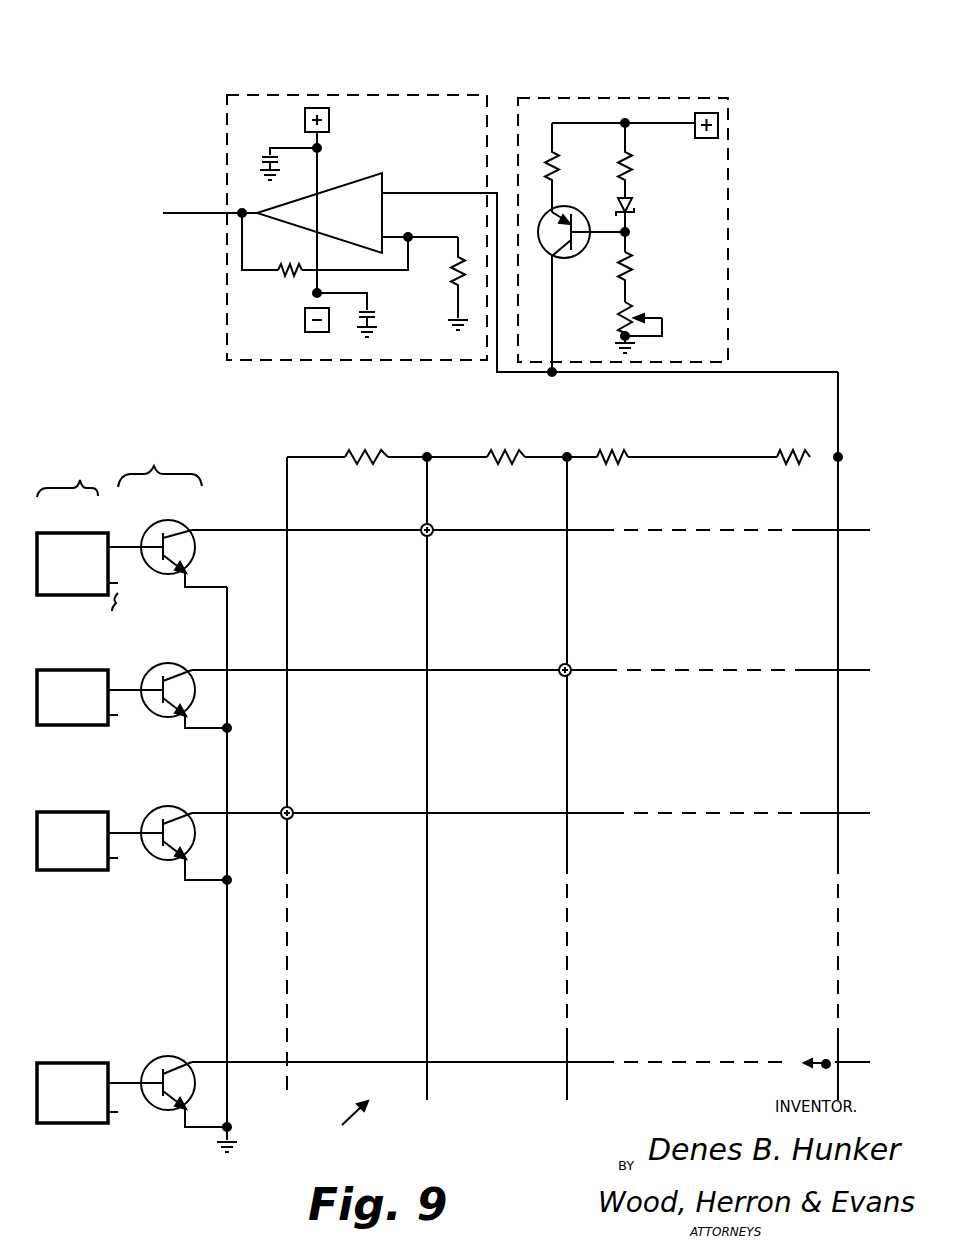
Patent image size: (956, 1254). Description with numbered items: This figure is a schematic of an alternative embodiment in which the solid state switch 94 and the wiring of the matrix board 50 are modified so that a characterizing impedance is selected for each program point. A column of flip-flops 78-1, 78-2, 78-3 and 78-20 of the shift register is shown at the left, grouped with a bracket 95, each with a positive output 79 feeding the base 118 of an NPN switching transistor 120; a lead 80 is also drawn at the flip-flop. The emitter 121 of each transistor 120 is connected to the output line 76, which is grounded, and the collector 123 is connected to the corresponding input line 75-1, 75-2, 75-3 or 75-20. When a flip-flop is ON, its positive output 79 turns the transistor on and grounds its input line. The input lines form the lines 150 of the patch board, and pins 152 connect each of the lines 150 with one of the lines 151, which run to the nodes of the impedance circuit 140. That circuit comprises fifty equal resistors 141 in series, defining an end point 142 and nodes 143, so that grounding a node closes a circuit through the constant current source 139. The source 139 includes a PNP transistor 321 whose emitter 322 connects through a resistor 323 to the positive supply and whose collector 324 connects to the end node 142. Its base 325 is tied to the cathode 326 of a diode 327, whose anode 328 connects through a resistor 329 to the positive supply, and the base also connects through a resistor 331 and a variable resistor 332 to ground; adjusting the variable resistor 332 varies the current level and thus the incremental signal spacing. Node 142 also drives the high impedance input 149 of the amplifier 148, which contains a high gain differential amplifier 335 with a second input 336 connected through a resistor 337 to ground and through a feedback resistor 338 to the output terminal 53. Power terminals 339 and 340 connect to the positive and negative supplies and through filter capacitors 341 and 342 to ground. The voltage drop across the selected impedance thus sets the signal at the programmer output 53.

The amplifier 148 is at (340, 92).
The constant current source 139 is at (626, 94).
The programmer output terminal 53 is at (195, 212).
The high gain differential amplifier 335 is at (319, 213).
The power terminal 339 is at (328, 166).
The filter capacitor 341 is at (257, 148).
The power terminal 340 is at (312, 246).
The feedback resistor 338 is at (281, 279).
The second input 336 is at (387, 235).
The resistor 337 is at (451, 270).
The filter capacitor 342 is at (383, 312).
The high impedance input 149 is at (399, 193).
The resistor 323 is at (552, 152).
The PNP transistor 321 is at (571, 196).
The emitter 322 is at (578, 208).
The collector 324 is at (550, 254).
The base 325 is at (578, 240).
The resistor 329 is at (633, 162).
The anode 328 is at (633, 199).
The diode 327 is at (637, 205).
The cathode 326 is at (637, 214).
The resistor 331 is at (638, 265).
The variable resistor 332 is at (648, 308).
The impedance circuit 140 is at (270, 460).
The resistors 141 is at (383, 453).
The nodes 143 is at (430, 454).
The end point 142 is at (847, 461).
The lines 151 is at (410, 697).
The lines 150 is at (523, 533).
The input line 75-1 is at (273, 534).
The input line 75-2 is at (253, 668).
The input line 75-3 is at (252, 812).
The input line 75-20 is at (253, 1062).
The pins 152 is at (434, 528).
The output line 76 is at (226, 933).
The flip-flop 78-1 is at (72, 564).
The flip-flop 78-2 is at (132, 695).
The flip-flop 78-3 is at (132, 843).
The flip-flop 78-20 is at (132, 1091).
The positive output 79 is at (110, 539).
The base 118 is at (118, 583).
The lead 80 is at (121, 612).
The NPN switching transistor 120 is at (172, 516).
The collector 123 is at (170, 541).
The emitter 121 is at (188, 580).
The solid state switch 94 is at (160, 464).
The flip-flop group 95 is at (67, 473).
The matrix board 50 is at (339, 1122).